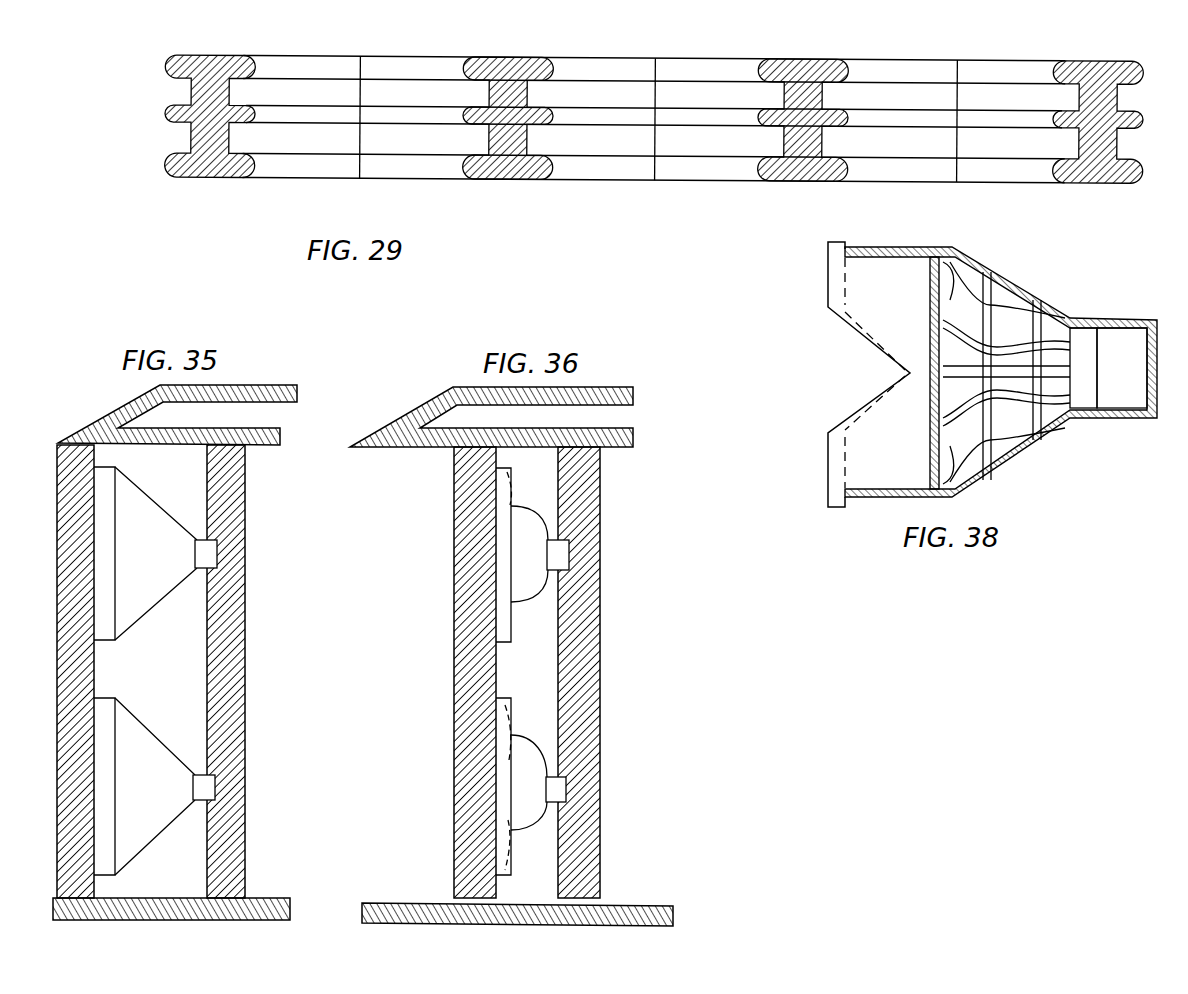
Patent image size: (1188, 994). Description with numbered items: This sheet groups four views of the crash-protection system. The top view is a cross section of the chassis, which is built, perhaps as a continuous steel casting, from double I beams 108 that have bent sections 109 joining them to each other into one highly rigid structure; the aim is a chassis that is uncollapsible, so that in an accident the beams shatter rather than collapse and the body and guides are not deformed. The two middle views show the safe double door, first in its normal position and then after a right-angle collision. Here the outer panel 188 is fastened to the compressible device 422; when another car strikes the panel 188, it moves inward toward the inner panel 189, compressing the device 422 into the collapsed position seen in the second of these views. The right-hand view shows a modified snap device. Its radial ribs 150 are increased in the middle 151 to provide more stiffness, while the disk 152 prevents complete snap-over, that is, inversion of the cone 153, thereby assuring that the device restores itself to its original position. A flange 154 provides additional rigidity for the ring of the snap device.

In FIG. 29, the double I beam 108 is at (212, 179).
In FIG. 29, the bent section 109 is at (388, 56).
In FIG. 35, the panel 188 is at (55, 460).
In FIG. 36, the panel 188 is at (456, 545).
In FIG. 35, the inner panel 189 is at (246, 620).
In FIG. 36, the inner panel 189 is at (600, 521).
In FIG. 35, the compressible device 422 is at (157, 612).
In FIG. 36, the compressible device 422 is at (525, 591).
In FIG. 38, the radial rib 150 is at (1072, 306).
In FIG. 38, the increased middle portion of rib 151 is at (1005, 305).
In FIG. 38, the disk 152 is at (950, 432).
In FIG. 38, the cone 153 is at (988, 474).
In FIG. 38, the flange 154 is at (837, 508).